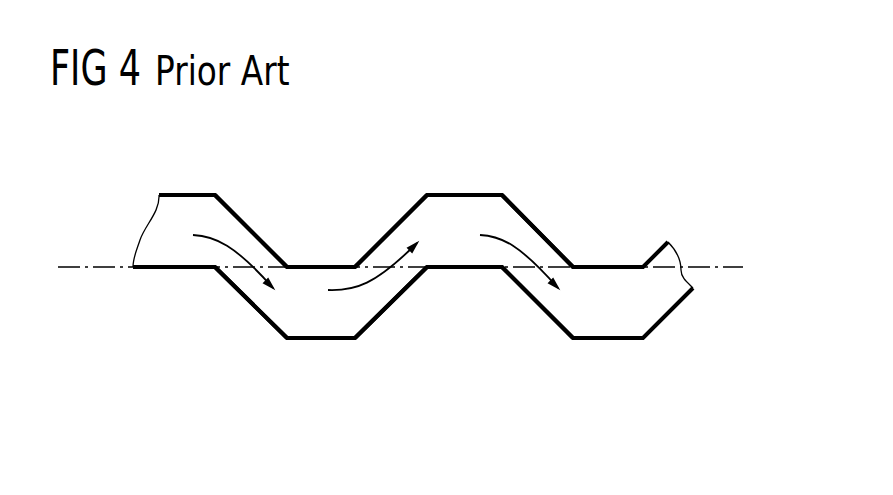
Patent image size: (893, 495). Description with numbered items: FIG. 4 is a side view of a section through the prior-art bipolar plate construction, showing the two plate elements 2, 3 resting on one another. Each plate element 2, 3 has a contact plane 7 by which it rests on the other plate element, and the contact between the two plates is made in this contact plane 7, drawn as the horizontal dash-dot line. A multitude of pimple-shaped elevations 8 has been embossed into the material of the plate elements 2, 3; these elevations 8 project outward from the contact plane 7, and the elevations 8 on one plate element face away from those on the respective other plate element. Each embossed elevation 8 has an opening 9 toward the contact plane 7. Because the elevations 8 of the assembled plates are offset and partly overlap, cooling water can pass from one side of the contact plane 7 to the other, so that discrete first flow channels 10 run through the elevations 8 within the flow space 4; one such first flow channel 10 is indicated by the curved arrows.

The first plate element 2 is at (493, 150).
The second plate element 3 is at (578, 390).
The flow space 4 is at (235, 343).
The contact plane 7 is at (737, 330).
The elevations 8 is at (540, 355).
The opening 9 is at (617, 378).
The first flow channel 10 is at (555, 218).